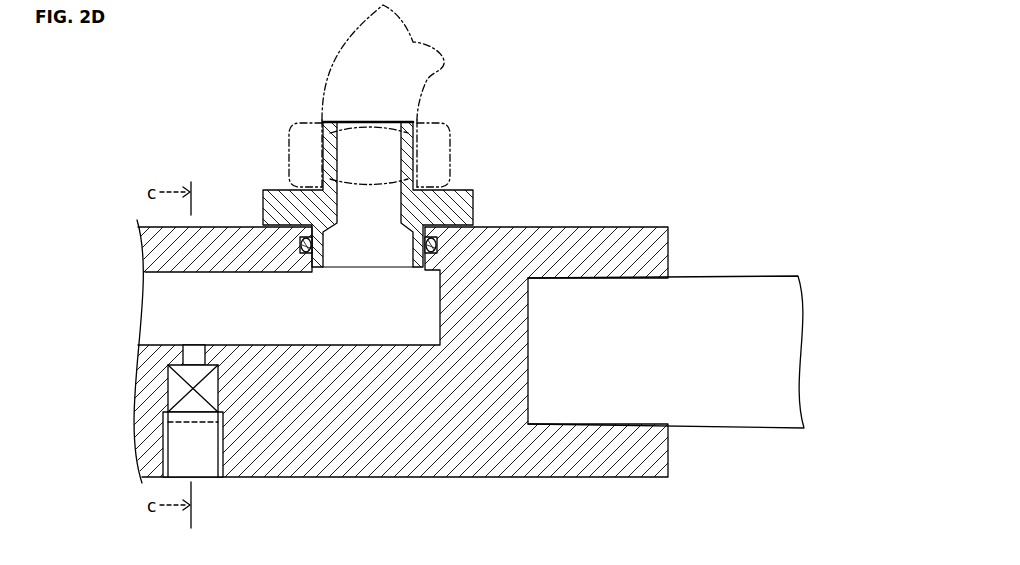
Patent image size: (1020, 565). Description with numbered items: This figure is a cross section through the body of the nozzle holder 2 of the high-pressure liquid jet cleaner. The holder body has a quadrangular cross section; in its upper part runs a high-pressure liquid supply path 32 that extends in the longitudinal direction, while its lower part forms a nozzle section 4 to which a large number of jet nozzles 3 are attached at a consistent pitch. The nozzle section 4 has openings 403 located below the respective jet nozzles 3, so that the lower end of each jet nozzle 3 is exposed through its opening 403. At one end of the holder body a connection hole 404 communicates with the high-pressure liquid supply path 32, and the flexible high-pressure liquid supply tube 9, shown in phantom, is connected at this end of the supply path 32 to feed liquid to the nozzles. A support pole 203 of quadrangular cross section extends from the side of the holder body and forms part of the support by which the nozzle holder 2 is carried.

The nozzle holder 2 is at (383, 333).
The jet nozzle 3 is at (178, 390).
The nozzle section 4 is at (307, 478).
The high-pressure liquid supply tube 9 is at (430, 78).
The high-pressure liquid supply path 32 is at (263, 277).
The support pole 203 is at (722, 278).
The opening 403 is at (205, 465).
The connection hole 404 is at (423, 282).